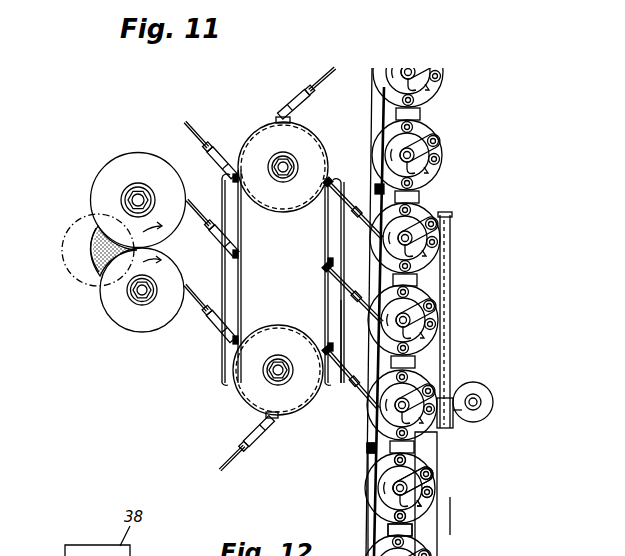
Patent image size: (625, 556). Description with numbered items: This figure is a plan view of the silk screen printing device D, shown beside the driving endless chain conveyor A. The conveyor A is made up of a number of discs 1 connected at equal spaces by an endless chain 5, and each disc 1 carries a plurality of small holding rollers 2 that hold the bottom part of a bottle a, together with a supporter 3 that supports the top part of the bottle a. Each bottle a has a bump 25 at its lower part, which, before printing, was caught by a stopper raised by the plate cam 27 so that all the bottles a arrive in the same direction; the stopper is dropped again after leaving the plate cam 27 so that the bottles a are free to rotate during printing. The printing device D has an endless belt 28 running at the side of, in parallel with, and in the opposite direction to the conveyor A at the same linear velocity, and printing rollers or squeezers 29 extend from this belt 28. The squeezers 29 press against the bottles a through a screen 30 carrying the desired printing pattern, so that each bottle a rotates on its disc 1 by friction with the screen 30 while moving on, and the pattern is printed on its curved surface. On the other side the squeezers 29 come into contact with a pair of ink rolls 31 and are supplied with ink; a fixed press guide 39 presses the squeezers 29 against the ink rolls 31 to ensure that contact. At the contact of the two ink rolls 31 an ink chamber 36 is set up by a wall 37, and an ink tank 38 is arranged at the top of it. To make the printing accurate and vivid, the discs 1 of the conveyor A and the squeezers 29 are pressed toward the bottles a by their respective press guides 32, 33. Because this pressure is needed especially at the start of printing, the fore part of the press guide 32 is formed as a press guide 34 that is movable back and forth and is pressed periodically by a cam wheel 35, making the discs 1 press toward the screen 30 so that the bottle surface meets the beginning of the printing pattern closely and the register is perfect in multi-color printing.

The ink tank 38 is at (72, 231).
The ink chamber wall 37 is at (104, 255).
The backing plate 36 is at (93, 272).
The ink rolls 31 is at (122, 318).
The fixed press guide 39 is at (220, 362).
The squeezers 29 is at (226, 470).
The printing device D is at (298, 262).
The endless belt 28 is at (324, 294).
The press guide 33 is at (346, 344).
The driving endless chain conveyor A is at (412, 148).
The bottles a is at (410, 318).
The press guide 32 is at (452, 348).
The cam wheel 35 is at (494, 400).
The movable press guide 34 is at (456, 426).
The plate cam 27 is at (430, 445).
The supporter 3 is at (418, 478).
The holding rollers 2 is at (432, 490).
The bump 25 is at (424, 500).
The screen 30 is at (367, 448).
The discs 1 is at (393, 490).
The endless chain 5 is at (392, 538).